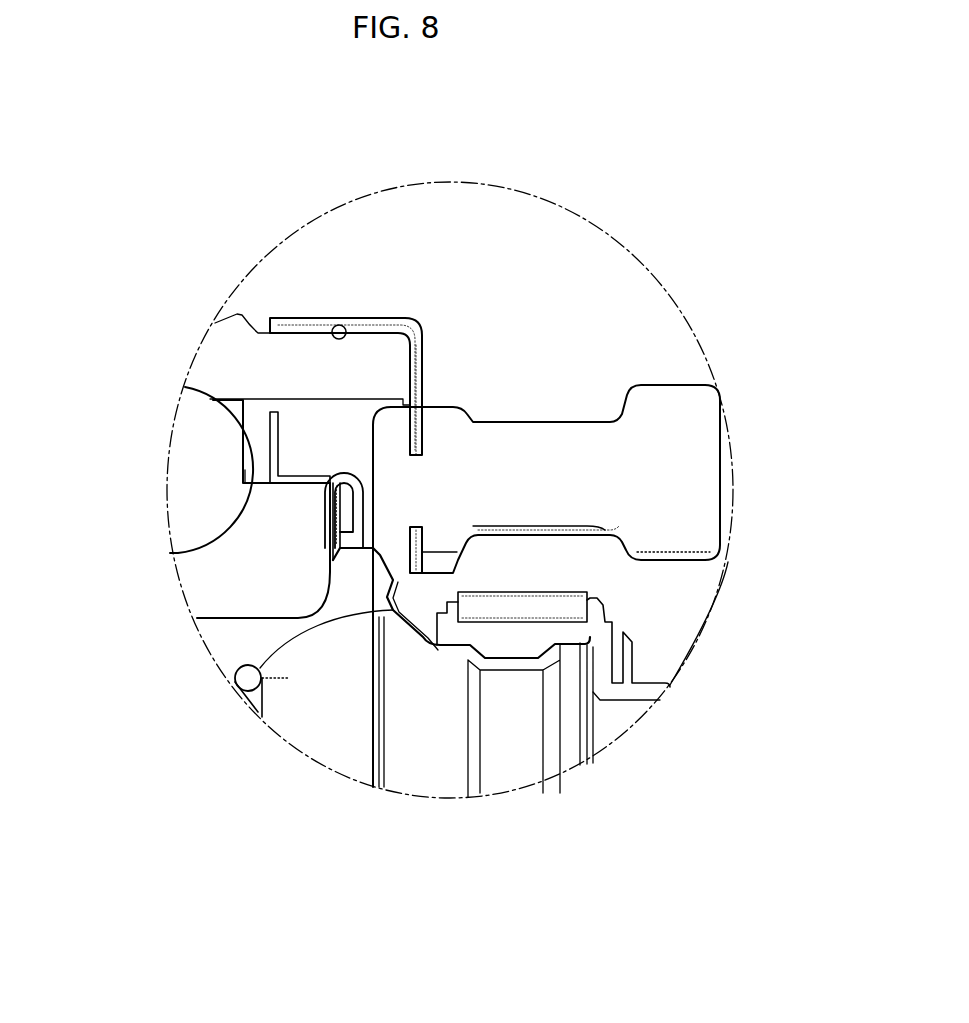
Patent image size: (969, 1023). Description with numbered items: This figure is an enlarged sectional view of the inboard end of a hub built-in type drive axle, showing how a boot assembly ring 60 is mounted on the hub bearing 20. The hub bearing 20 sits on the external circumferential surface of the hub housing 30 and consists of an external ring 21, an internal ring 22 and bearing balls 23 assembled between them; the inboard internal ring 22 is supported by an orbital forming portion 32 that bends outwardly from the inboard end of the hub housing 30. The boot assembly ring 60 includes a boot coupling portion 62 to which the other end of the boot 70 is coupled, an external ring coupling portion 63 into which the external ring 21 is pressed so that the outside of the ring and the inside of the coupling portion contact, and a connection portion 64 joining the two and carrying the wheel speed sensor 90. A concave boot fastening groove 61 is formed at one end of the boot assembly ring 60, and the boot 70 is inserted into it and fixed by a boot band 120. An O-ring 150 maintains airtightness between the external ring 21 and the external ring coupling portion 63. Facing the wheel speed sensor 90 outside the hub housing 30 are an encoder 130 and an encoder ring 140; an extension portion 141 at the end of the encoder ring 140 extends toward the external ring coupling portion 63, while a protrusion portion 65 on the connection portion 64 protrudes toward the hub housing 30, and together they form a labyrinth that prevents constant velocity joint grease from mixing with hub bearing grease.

The hub bearing 20 is at (187, 525).
The external ring 21 is at (300, 367).
The internal ring 22 is at (210, 580).
The bearing balls 23 is at (190, 477).
The hub housing 30 is at (337, 728).
The orbital forming portion 32 is at (343, 575).
The boot assembly ring 60 is at (510, 750).
The boot fastening groove 61 is at (560, 607).
The boot coupling portion 62 is at (573, 642).
The external ring coupling portion 63 is at (370, 335).
The connection portion 64 is at (418, 390).
The protrusion portion 65 is at (233, 685).
The boot 70 is at (497, 638).
The wheel speed sensor 90 is at (683, 457).
The boot band 120 is at (540, 600).
The encoder 130 is at (360, 498).
The encoder ring 140 is at (340, 497).
The extension portion 141 is at (273, 433).
The O-ring 150 is at (339, 325).